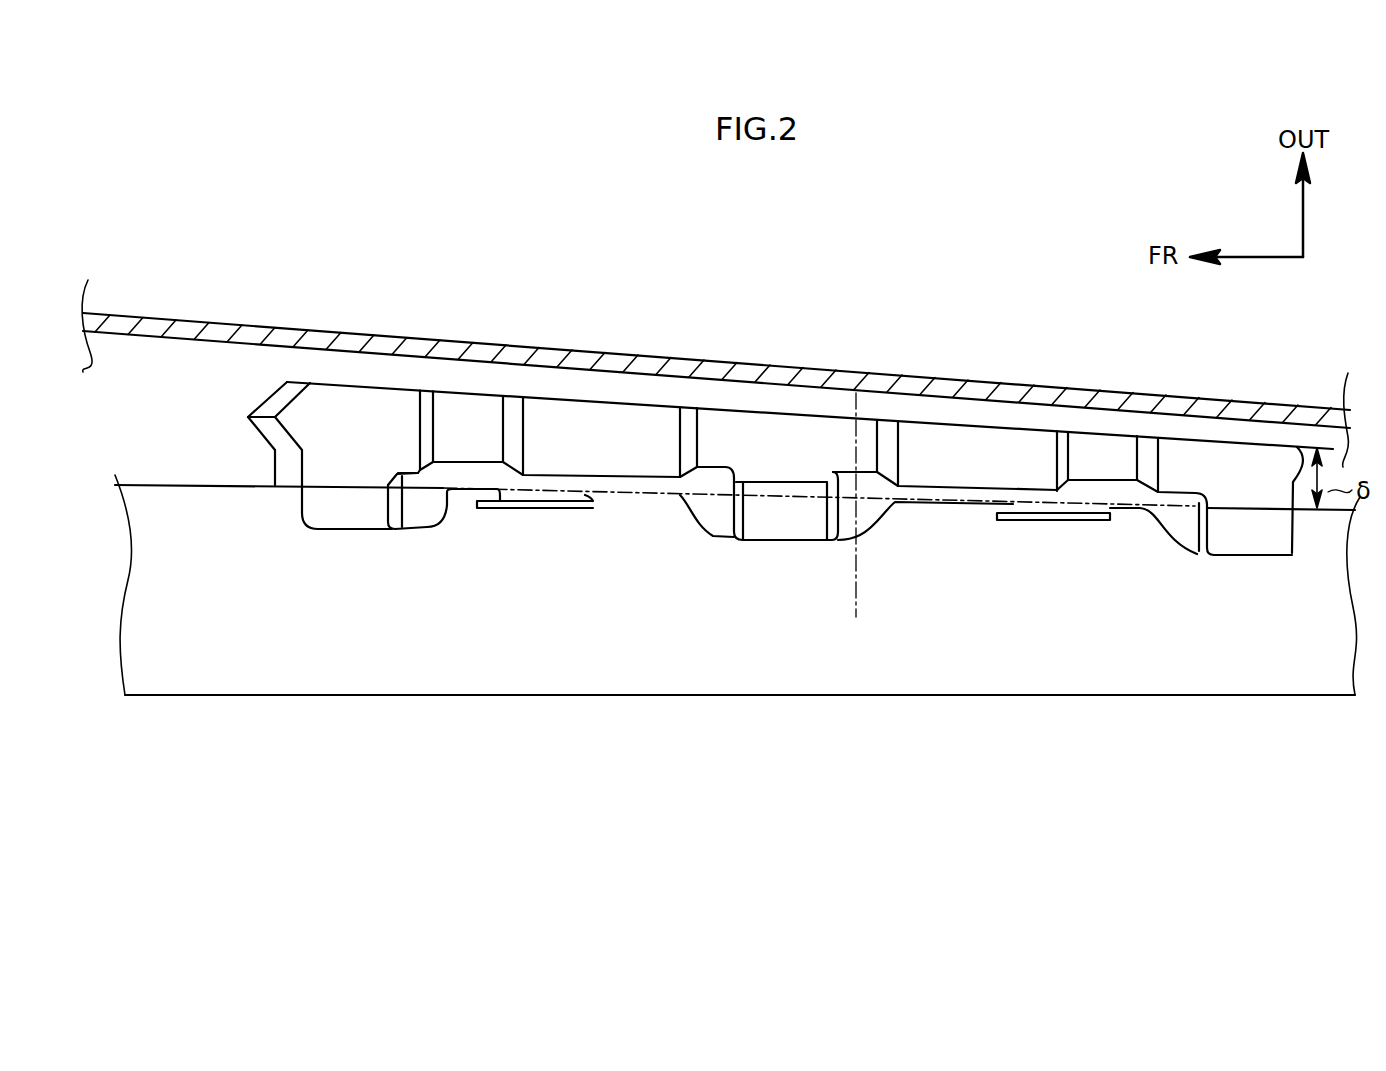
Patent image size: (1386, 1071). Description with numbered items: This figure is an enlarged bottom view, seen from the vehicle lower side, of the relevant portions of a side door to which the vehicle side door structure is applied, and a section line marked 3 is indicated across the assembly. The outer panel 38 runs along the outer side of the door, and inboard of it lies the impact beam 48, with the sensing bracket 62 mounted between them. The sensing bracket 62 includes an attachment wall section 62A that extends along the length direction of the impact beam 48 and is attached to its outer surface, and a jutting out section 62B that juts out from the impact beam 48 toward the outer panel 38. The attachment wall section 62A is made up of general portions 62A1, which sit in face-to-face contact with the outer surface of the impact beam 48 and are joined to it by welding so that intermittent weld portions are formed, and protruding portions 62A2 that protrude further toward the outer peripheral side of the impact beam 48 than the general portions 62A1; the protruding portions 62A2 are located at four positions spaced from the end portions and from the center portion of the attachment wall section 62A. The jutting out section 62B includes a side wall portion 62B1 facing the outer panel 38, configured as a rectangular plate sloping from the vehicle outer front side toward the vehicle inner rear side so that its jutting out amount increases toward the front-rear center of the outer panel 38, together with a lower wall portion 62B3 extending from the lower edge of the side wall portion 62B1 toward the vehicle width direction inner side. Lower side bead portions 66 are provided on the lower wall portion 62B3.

The outer panel 38 is at (776, 360).
The impact beam 48 is at (738, 665).
The sensing bracket 62 is at (696, 450).
The attachment wall section 62A is at (351, 529).
The general portions 62A1 is at (367, 512).
The protruding portions 62A2 is at (428, 505).
The jutting out section 62B is at (578, 393).
The side wall portion 62B1 is at (390, 387).
The lower wall portion 62B3 is at (982, 455).
The lower side bead portions 66 is at (353, 413).
The section line 3- 3 is at (853, 401).